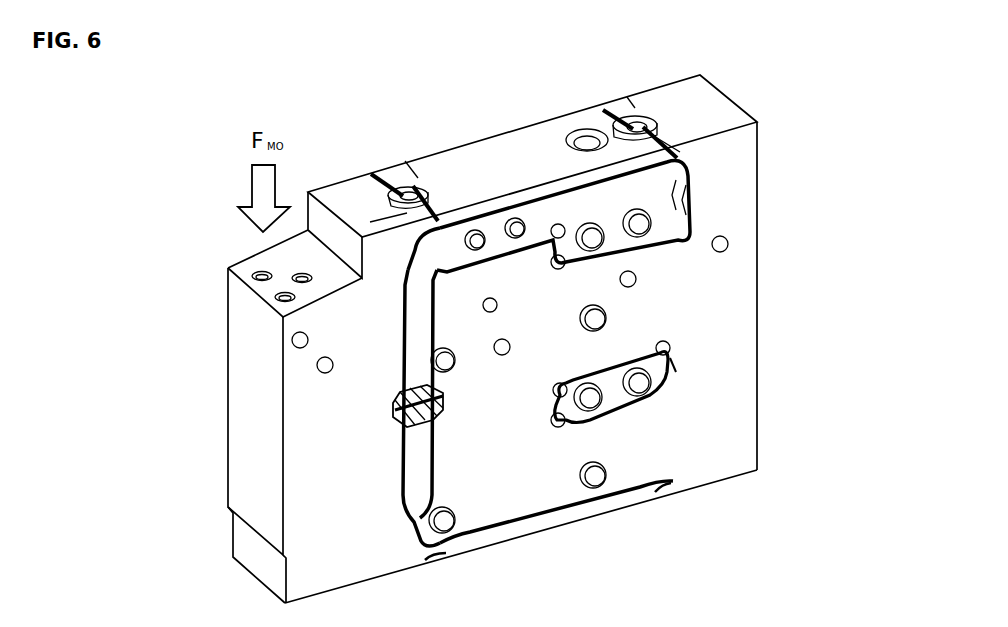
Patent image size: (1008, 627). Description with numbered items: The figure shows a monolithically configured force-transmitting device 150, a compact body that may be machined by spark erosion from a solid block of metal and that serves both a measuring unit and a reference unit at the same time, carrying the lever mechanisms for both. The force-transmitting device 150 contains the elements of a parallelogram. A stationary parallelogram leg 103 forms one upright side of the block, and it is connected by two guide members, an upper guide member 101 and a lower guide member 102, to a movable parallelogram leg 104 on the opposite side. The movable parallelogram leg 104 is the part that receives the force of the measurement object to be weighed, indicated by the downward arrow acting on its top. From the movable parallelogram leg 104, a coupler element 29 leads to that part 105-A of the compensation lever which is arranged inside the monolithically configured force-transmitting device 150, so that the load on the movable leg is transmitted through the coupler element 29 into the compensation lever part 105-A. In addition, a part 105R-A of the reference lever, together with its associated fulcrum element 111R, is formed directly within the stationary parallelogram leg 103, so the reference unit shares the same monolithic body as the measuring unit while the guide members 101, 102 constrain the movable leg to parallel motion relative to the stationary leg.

The monolithically configured force-transmitting device 150 is at (782, 137).
The guide member 101 is at (495, 160).
The guide member 102 is at (555, 515).
The stationary parallelogram leg 103 is at (758, 240).
The movable parallelogram leg 104 is at (268, 387).
The part of the compensation lever 105-A is at (613, 225).
The part of the reference lever 105R-A is at (613, 393).
The fulcrum element 111R is at (670, 357).
The coupler element 29 is at (402, 397).